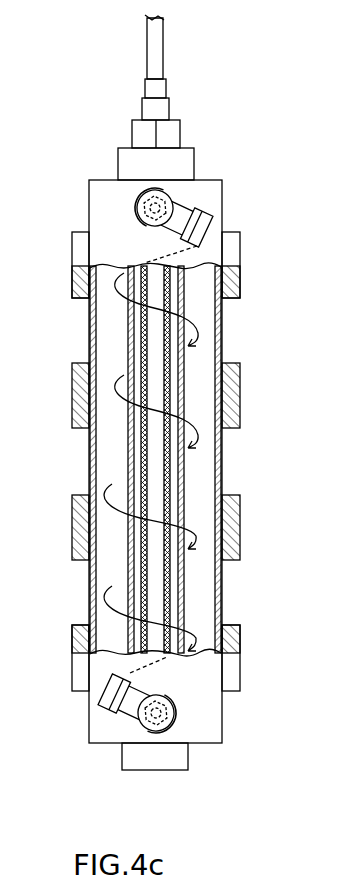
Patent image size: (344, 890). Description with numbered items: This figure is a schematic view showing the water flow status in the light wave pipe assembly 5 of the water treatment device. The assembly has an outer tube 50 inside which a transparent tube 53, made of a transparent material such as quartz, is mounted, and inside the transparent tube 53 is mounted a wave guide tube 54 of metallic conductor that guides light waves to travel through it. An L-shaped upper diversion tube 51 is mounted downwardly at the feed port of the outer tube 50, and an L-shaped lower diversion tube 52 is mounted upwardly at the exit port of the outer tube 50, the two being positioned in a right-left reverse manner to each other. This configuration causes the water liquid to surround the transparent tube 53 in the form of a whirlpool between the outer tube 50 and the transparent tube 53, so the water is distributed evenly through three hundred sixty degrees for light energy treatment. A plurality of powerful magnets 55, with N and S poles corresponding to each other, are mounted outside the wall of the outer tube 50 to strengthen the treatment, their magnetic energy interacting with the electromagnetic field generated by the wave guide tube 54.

The light wave pipe assembly 5 is at (240, 132).
The outer tube 50 is at (210, 183).
The upper diversion tube 51 is at (212, 207).
The lower diversion tube 52 is at (97, 699).
The transparent tube 53 is at (128, 443).
The wave guide tube 54 is at (142, 334).
The powerful magnets 55 is at (240, 280).